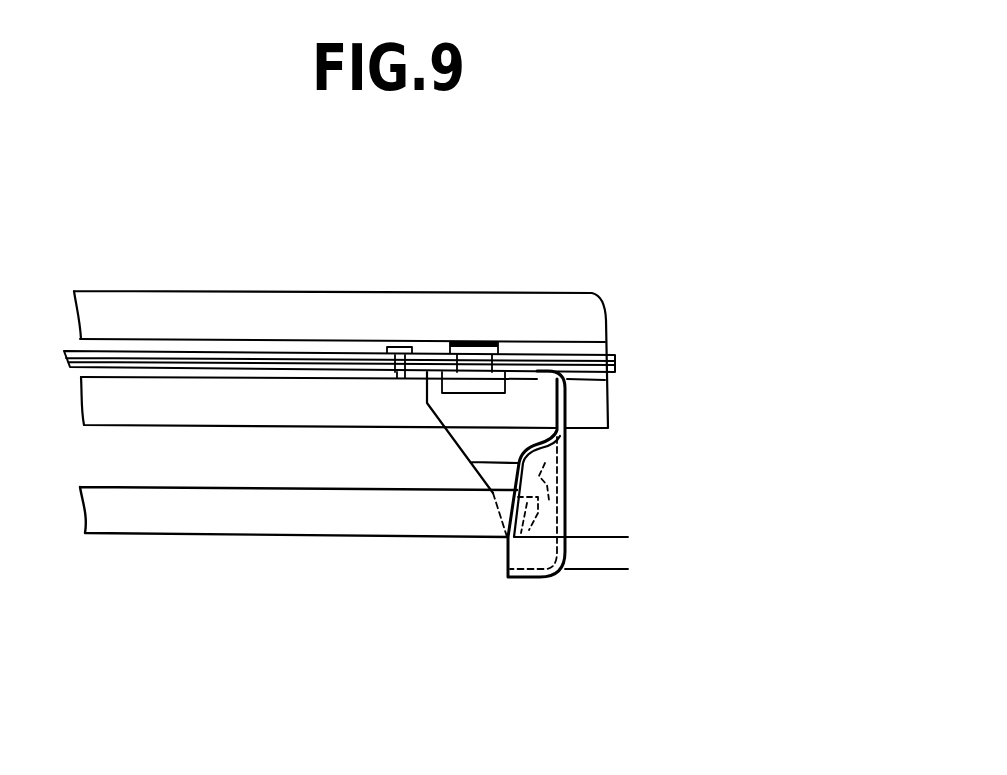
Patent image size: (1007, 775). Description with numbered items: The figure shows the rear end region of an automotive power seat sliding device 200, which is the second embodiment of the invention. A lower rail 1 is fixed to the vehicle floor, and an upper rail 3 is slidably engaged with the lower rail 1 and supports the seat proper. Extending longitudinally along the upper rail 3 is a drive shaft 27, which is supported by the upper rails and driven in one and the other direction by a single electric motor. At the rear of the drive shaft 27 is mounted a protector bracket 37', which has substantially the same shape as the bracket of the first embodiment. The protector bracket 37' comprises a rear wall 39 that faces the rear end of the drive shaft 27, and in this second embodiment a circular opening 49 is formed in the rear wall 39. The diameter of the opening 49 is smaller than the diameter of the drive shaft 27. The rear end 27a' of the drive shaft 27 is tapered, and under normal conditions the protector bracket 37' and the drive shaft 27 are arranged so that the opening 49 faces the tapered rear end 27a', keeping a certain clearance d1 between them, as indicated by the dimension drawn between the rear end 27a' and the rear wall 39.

The automotive power seat sliding device 200 is at (735, 150).
The lower rail 1 is at (538, 298).
The upper rail 3 is at (338, 346).
The drive shaft 27 is at (185, 520).
The rear end of the drive shaft 27a' is at (455, 571).
The protector bracket 37' is at (559, 538).
The rear wall 39 is at (565, 482).
The circular opening 49 is at (565, 515).
The clearance d1 is at (622, 537).